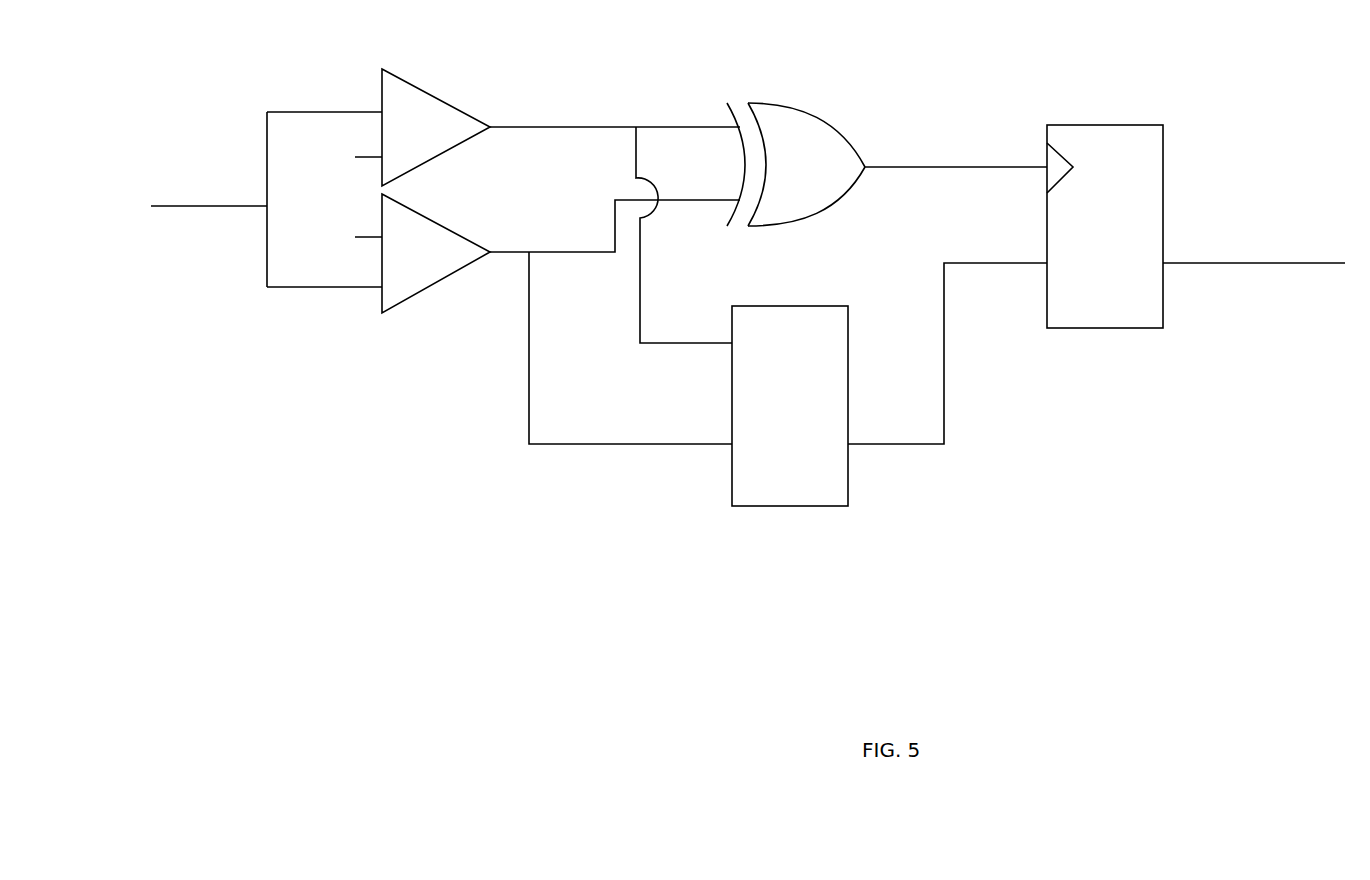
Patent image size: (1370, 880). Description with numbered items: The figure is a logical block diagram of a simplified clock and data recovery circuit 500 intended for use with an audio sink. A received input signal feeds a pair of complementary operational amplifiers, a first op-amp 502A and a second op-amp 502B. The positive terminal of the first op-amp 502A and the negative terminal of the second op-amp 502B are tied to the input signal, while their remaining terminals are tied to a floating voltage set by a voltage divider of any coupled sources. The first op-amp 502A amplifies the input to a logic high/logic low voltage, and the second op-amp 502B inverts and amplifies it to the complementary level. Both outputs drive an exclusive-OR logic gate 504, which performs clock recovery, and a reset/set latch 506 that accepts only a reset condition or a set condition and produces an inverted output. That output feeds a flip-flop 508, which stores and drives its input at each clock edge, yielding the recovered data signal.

The clock and data recovery circuit 500 is at (1210, 667).
The first op-amp 502A is at (440, 99).
The second op-amp 502B is at (440, 224).
The exclusive-OR (XOR) logic gate 504 is at (808, 112).
The reset/set (R/S) latch 506 is at (763, 306).
The flip-flop 508 is at (1100, 125).